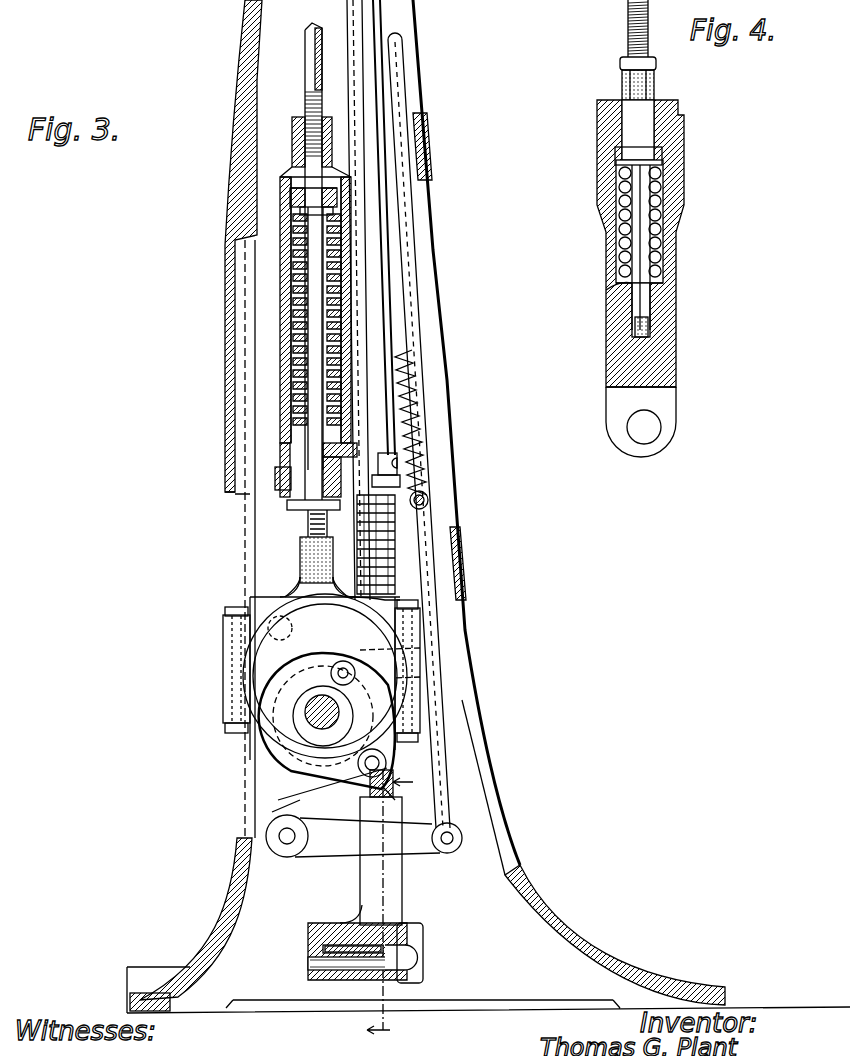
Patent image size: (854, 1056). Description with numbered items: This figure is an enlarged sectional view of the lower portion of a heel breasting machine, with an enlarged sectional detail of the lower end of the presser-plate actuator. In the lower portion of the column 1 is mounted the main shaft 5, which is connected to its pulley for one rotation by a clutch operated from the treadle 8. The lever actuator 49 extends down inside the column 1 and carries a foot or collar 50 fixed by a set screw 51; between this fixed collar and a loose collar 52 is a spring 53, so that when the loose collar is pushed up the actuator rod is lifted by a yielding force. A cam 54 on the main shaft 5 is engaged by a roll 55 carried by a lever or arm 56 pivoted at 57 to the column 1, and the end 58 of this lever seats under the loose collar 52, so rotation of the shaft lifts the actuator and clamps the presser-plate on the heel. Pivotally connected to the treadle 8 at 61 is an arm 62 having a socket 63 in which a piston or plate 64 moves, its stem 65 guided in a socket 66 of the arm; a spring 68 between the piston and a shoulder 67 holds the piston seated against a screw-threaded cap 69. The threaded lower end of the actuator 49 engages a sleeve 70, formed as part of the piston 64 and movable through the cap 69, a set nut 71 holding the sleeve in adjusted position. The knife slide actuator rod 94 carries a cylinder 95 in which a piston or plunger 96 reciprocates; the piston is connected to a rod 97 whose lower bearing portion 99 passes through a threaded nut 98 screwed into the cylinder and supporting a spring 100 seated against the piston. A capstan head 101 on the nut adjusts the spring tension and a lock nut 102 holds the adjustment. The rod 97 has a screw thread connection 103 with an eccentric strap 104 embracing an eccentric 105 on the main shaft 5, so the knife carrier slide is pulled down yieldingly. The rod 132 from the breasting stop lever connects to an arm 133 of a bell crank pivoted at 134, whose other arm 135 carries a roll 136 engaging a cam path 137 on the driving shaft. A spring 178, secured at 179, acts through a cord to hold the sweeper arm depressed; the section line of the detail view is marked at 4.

In FIG. 3, the column 1 is at (462, 577).
In FIG. 3, the bracket 4 is at (390, 912).
In FIG. 3, the main shaft 5 is at (310, 710).
In FIG. 3, the treadle 8 is at (348, 968).
In FIG. 3, the lever actuator 49 is at (395, 20).
In FIG. 4, the lever actuator 49 is at (628, 6).
In FIG. 3, the foot or collar 50 is at (402, 486).
In FIG. 3, the set screw 51 is at (420, 440).
In FIG. 3, the loose collar 52 is at (400, 598).
In FIG. 3, the spring 53 is at (400, 545).
In FIG. 3, the cam 54 is at (255, 680).
In FIG. 3, the roll 55 is at (430, 677).
In FIG. 3, the lever or arm 56 is at (430, 648).
In FIG. 3, the pivot 57 is at (262, 597).
In FIG. 3, the lever end 58 is at (420, 625).
In FIG. 3, the pivotal connection 61 is at (308, 962).
In FIG. 4, the pivotal connection 61 is at (640, 425).
In FIG. 3, the arm 62 is at (400, 882).
In FIG. 4, the arm 62 is at (677, 333).
In FIG. 4, the socket 63 is at (665, 178).
In FIG. 4, the piston or plate 64 is at (630, 157).
In FIG. 4, the stem 65 is at (628, 230).
In FIG. 4, the socket 66 is at (640, 327).
In FIG. 4, the shoulder 67 is at (607, 290).
In FIG. 4, the spring 68 is at (616, 200).
In FIG. 4, the screw-threaded cap 69 is at (598, 108).
In FIG. 4, the sleeve 70 is at (656, 88).
In FIG. 4, the set nut 71 is at (621, 64).
In FIG. 3, the knife slide actuator rod 94 is at (305, 45).
In FIG. 3, the cylinder 95 is at (295, 138).
In FIG. 3, the piston or plunger 96 is at (300, 193).
In FIG. 3, the rod 97 is at (306, 217).
In FIG. 3, the threaded nut 98 is at (300, 447).
In FIG. 3, the lower bearing portion 99 is at (310, 425).
In FIG. 3, the spring 100 is at (292, 250).
In FIG. 3, the capstan head 101 is at (287, 506).
In FIG. 3, the lock nut 102 is at (277, 470).
In FIG. 3, the screw thread connection 103 is at (305, 560).
In FIG. 3, the eccentric strap 104 is at (297, 580).
In FIG. 3, the eccentric 105 is at (300, 605).
In FIG. 3, the rod 132 is at (418, 207).
In FIG. 3, the arm 133 is at (455, 848).
In FIG. 3, the pivot 134 is at (282, 835).
In FIG. 3, the arm 135 is at (305, 803).
In FIG. 3, the roll 136 is at (395, 760).
In FIG. 3, the cam path 137 is at (400, 733).
In FIG. 3, the spring 178 is at (407, 410).
In FIG. 3, the spring anchorage 179 is at (430, 504).